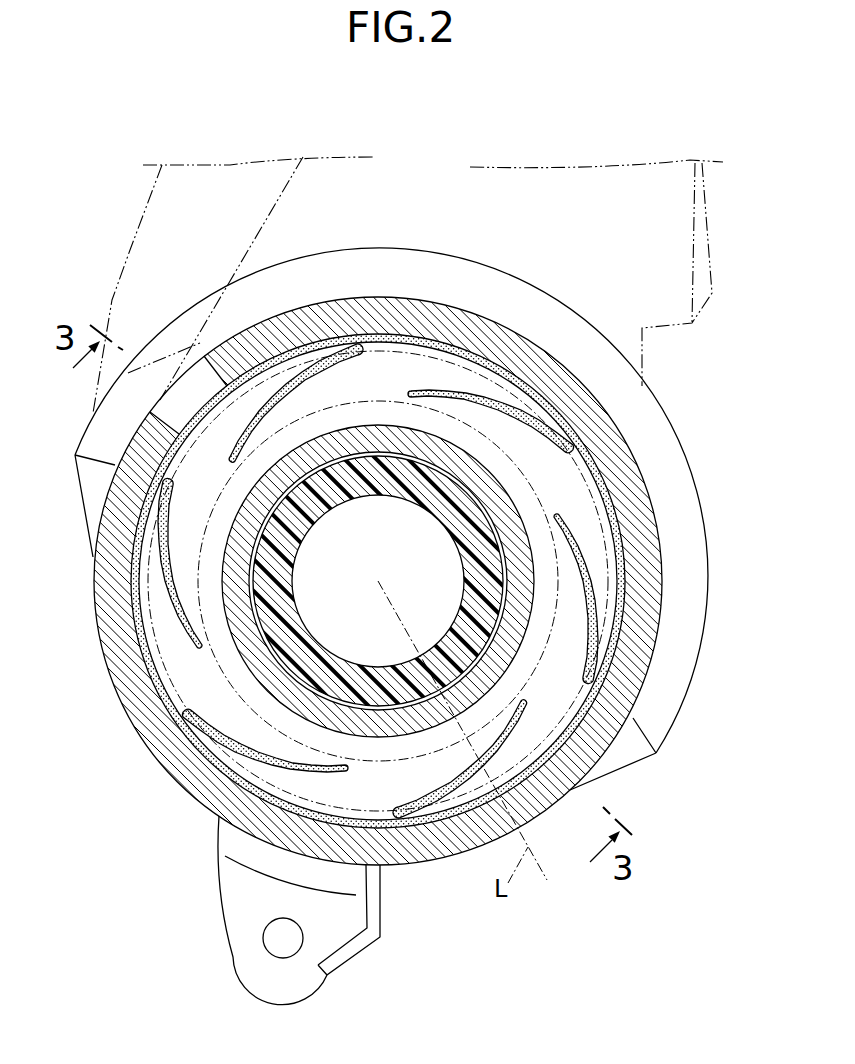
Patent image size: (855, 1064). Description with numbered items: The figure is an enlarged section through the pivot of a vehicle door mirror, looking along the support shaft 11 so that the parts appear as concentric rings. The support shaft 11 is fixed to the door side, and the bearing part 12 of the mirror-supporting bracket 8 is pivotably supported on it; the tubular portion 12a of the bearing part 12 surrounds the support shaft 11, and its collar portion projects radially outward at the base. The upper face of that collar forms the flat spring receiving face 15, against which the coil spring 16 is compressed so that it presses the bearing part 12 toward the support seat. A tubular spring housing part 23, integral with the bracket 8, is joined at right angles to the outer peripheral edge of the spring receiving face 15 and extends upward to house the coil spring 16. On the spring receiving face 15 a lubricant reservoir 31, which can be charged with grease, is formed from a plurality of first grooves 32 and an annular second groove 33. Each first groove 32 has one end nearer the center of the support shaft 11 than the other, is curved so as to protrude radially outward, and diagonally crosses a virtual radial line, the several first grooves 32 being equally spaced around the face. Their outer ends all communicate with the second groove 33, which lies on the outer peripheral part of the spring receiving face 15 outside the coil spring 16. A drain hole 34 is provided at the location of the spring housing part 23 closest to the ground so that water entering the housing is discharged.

The bracket 8 is at (703, 223).
The support shaft 11 is at (297, 637).
The bearing part 12 is at (630, 772).
The tubular portion 12a is at (497, 507).
The spring receiving face 15 is at (183, 682).
The coil spring 16 is at (405, 342).
The spring housing part 23 is at (448, 310).
The lubricant reservoir 31 is at (215, 777).
The first groove 32 is at (300, 383).
The second groove 33 is at (623, 608).
The drain hole 34 is at (210, 380).